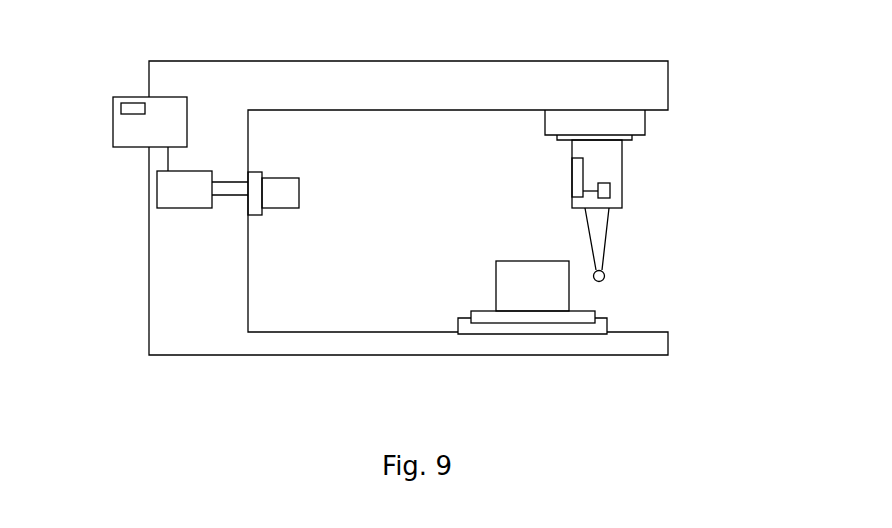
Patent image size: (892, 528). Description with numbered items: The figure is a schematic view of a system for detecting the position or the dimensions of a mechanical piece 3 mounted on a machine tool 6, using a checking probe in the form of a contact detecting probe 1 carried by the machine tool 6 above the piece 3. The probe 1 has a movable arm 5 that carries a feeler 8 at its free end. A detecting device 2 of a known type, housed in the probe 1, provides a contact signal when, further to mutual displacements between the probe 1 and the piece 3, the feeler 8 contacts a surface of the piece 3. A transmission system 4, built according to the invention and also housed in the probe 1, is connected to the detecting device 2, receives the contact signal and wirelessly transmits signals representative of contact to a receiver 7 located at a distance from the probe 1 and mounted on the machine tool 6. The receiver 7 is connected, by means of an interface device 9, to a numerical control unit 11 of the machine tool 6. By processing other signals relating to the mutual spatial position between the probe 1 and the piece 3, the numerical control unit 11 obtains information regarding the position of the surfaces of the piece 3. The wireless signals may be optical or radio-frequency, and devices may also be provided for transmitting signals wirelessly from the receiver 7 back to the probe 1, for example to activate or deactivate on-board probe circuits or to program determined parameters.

The contact detecting probe 1 is at (607, 147).
The detecting device 2 is at (608, 197).
The mechanical piece 3 is at (508, 282).
The transmission system 4 is at (580, 168).
The movable arm 5 is at (600, 232).
The machine tool 6 is at (187, 343).
The receiver 7 is at (287, 197).
The feeler 8 is at (604, 279).
The interface device 9 is at (187, 198).
The numerical control unit 11 is at (137, 133).